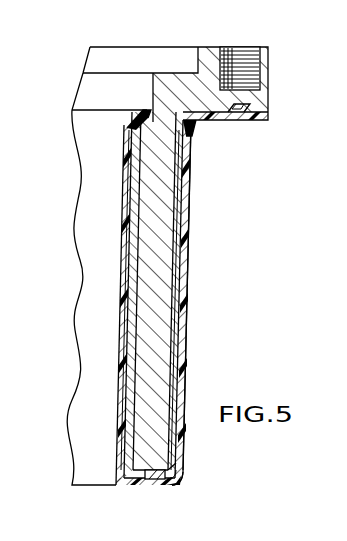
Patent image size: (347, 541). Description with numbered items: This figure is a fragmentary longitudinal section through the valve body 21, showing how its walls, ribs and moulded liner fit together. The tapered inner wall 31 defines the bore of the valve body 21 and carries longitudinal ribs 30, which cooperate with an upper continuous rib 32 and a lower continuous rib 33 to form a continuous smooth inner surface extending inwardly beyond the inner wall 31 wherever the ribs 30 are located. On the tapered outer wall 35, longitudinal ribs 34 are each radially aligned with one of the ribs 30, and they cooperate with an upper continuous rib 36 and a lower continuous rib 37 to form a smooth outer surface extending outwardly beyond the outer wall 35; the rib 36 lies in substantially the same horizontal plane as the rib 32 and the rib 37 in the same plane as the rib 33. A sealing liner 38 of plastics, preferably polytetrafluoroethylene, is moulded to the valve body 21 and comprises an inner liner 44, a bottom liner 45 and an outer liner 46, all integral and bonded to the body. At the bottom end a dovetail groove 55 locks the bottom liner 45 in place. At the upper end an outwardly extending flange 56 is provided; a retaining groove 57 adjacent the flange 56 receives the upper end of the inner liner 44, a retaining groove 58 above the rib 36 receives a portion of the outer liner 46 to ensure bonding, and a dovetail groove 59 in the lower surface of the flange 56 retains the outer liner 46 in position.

The valve body 21 is at (273, 71).
The longitudinal ribs 30 is at (121, 403).
The tapered inner wall 31 is at (128, 334).
The upper continuous rib 32 is at (125, 140).
The lower continuous rib 33 is at (120, 458).
The longitudinal ribs 34 is at (185, 252).
The tapered outer wall 35 is at (178, 338).
The upper continuous rib 36 is at (192, 150).
The lower continuous rib 37 is at (176, 463).
The sealing liner 38 is at (193, 327).
The inner liner 44 is at (128, 298).
The bottom liner 45 is at (166, 487).
The outer liner 46 is at (186, 292).
The dovetail groove 55 is at (152, 478).
The outwardly extending flange 56 is at (268, 97).
The retaining groove 57 is at (147, 110).
The retaining groove 58 is at (196, 120).
The dovetail groove 59 is at (240, 118).